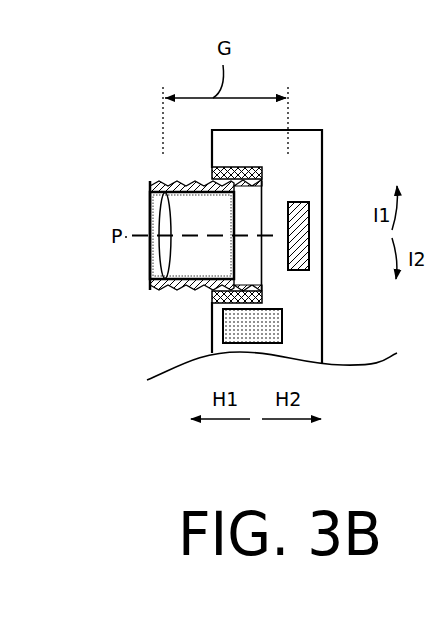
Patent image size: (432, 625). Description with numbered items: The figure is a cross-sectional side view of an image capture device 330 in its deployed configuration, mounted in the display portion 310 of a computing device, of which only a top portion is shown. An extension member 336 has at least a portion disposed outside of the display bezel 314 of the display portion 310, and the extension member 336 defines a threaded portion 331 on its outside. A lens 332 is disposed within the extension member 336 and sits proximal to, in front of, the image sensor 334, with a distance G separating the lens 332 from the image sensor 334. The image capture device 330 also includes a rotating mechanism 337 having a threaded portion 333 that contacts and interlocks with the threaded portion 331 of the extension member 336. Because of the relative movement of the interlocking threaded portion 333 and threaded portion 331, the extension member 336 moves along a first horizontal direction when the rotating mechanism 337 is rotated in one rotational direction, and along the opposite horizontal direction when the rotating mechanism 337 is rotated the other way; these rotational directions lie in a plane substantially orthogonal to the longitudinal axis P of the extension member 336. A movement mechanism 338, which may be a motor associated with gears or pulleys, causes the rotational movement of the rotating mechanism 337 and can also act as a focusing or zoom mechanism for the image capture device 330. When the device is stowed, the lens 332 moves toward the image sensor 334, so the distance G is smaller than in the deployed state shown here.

The display portion 310 is at (358, 105).
The display bezel 314 is at (210, 343).
The image capture device 330 is at (130, 125).
The threaded portion 331 is at (167, 292).
The lens 332 is at (157, 222).
The threaded portion 333 is at (232, 177).
The image sensor 334 is at (304, 228).
The extension member 336 is at (145, 275).
The rotating mechanism 337 is at (264, 177).
The movement mechanism 338 is at (259, 323).